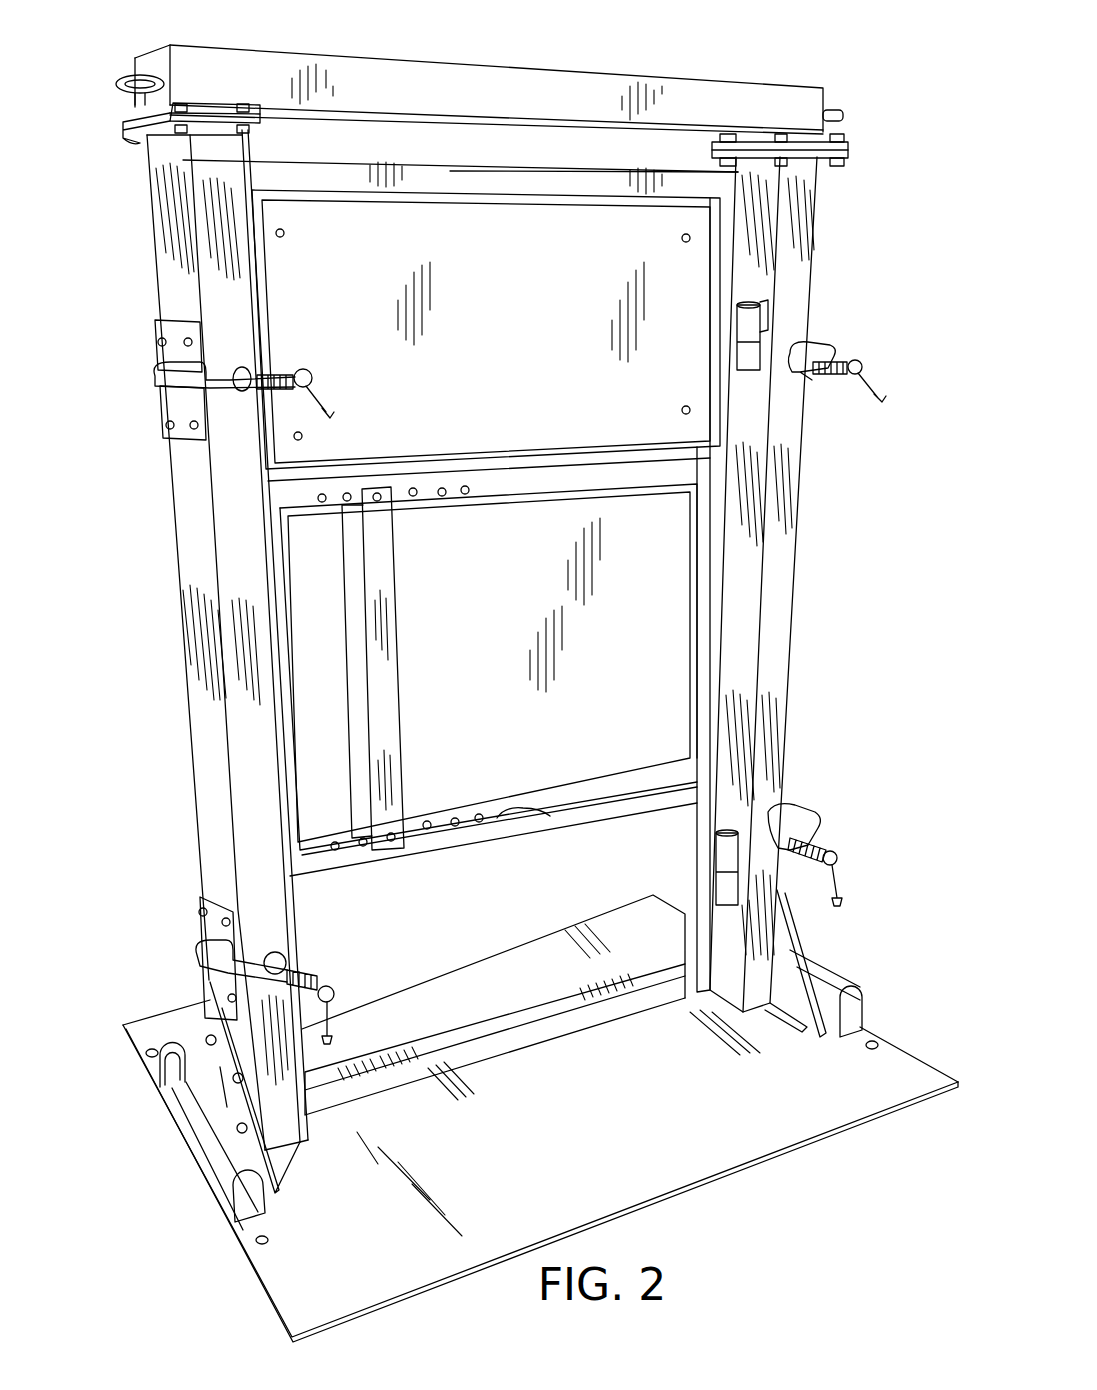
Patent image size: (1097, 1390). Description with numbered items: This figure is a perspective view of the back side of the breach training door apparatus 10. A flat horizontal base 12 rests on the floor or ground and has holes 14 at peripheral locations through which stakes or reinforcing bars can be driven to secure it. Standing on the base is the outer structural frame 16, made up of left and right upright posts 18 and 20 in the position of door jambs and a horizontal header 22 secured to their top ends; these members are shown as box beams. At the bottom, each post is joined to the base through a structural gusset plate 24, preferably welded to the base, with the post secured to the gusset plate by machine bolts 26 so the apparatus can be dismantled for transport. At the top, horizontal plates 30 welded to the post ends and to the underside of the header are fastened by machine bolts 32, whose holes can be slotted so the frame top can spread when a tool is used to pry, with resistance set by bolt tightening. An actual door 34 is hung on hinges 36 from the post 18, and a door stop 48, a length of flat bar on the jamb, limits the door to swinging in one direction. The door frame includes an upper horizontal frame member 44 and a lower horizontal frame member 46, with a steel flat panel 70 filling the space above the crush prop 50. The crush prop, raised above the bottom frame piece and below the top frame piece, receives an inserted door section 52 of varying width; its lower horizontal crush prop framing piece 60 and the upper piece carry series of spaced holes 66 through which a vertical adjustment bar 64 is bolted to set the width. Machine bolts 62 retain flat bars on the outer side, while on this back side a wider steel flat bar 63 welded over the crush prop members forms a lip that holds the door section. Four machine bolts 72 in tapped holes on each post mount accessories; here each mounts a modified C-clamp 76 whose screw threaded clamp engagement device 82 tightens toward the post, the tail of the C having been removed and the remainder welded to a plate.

The breach training door apparatus 10 is at (650, 52).
The base 12 is at (248, 1280).
The holes 14 is at (146, 1053).
The outer structural frame 16 is at (132, 204).
The upright post 18 is at (790, 540).
The upright post 20 is at (200, 548).
The header 22 is at (358, 65).
The gusset plate 24 is at (215, 1025).
The machine bolts 26 is at (237, 1128).
The horizontal plates 30 is at (145, 122).
The machine bolts 32 is at (243, 104).
The door 34 is at (571, 150).
The hinges 36 is at (737, 326).
The upper horizontal frame member 44 is at (473, 178).
The lower horizontal frame member 46 is at (525, 1040).
The door stop 48 is at (280, 688).
The crush prop 50 is at (752, 634).
The door section 52 is at (528, 700).
The lower horizontal crush prop framing piece 60 is at (520, 822).
The machine bolts 62 is at (384, 497).
The flat bar 63 is at (545, 483).
The vertical adjustment bar 64 is at (390, 590).
The holes 66 is at (349, 493).
The flat panel 70 is at (525, 318).
The machine bolts 72 is at (186, 340).
The modified C-clamp 76 is at (132, 376).
The screw threaded clamp engagement device 82 is at (263, 393).